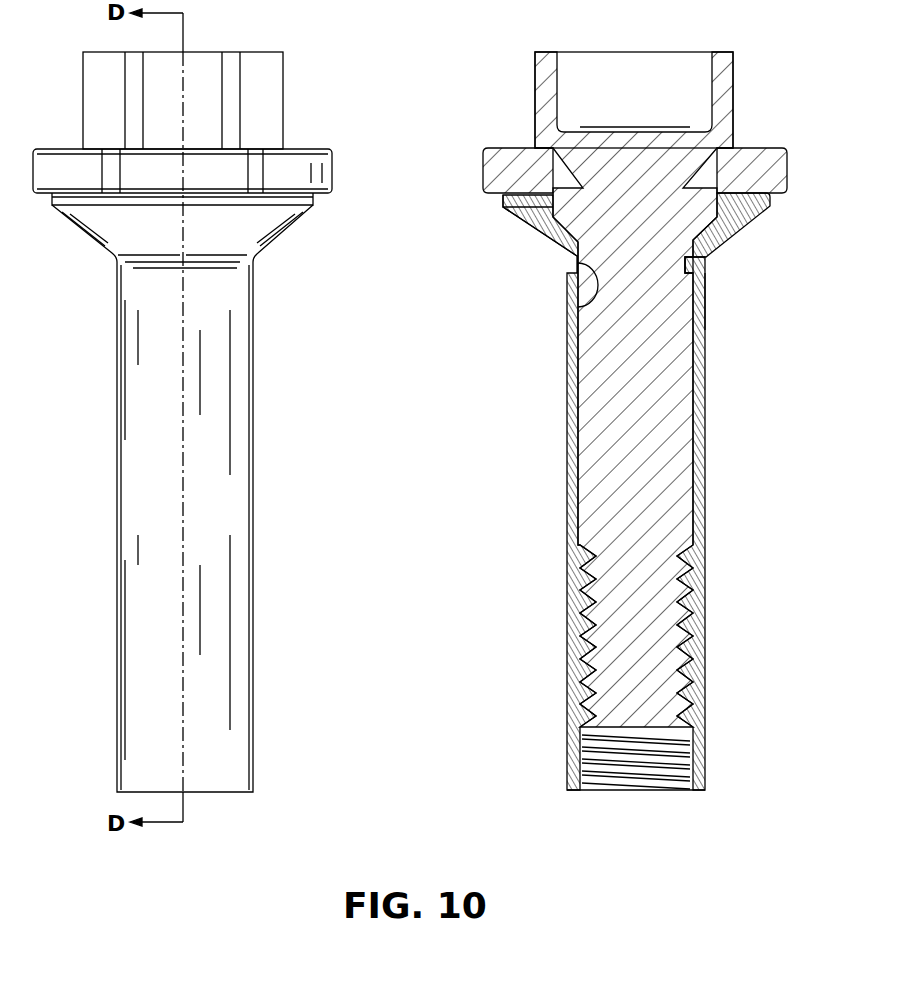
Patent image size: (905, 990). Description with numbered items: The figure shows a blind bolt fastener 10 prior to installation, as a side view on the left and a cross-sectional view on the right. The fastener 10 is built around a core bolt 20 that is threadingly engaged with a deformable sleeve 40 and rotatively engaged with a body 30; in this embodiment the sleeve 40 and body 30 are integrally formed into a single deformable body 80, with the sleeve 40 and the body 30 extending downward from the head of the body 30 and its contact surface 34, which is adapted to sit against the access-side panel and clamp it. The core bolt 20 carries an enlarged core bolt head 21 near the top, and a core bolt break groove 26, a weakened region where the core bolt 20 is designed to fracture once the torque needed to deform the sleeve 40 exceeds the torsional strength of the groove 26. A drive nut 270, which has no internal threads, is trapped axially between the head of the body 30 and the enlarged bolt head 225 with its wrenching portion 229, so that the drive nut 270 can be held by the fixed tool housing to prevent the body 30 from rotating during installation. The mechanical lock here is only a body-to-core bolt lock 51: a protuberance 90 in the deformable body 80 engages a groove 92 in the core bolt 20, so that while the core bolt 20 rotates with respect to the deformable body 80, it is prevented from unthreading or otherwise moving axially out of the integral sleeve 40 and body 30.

The mechanically locked blind bolt fastener 10 is at (288, 487).
The core bolt 20 is at (605, 673).
The core bolt head 21 is at (722, 225).
The core bolt break groove 26 is at (563, 178).
The body 30 is at (272, 243).
The contact surface 34 is at (552, 243).
The deformable sleeve 40 is at (253, 645).
The body-to-core bolt lock 51 is at (728, 290).
The deformable body 80 is at (250, 413).
The protuberance 90 is at (705, 262).
The groove 92 is at (577, 300).
The enlarged bolt head 225 is at (733, 72).
The wrenching portion 229 is at (257, 88).
The drive nut 270 is at (330, 172).